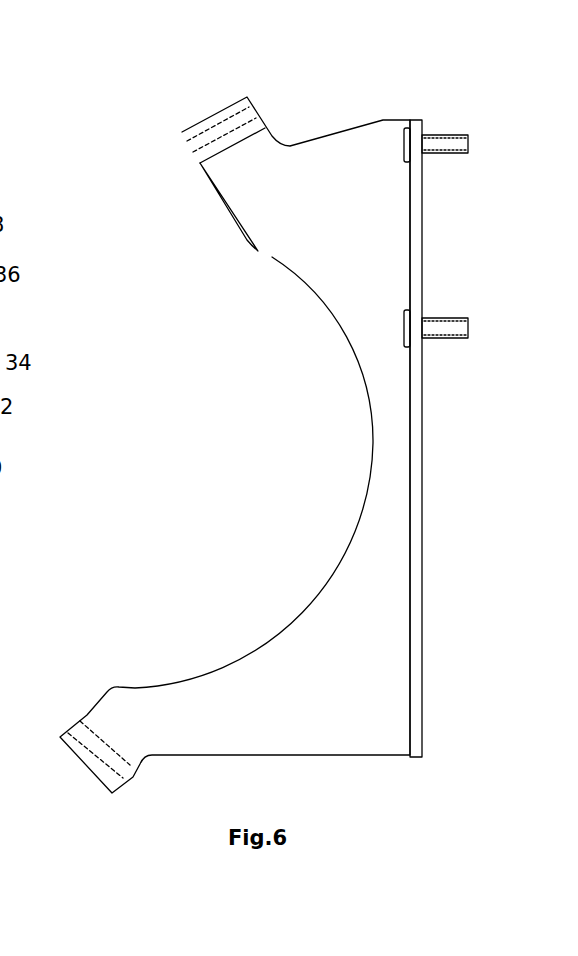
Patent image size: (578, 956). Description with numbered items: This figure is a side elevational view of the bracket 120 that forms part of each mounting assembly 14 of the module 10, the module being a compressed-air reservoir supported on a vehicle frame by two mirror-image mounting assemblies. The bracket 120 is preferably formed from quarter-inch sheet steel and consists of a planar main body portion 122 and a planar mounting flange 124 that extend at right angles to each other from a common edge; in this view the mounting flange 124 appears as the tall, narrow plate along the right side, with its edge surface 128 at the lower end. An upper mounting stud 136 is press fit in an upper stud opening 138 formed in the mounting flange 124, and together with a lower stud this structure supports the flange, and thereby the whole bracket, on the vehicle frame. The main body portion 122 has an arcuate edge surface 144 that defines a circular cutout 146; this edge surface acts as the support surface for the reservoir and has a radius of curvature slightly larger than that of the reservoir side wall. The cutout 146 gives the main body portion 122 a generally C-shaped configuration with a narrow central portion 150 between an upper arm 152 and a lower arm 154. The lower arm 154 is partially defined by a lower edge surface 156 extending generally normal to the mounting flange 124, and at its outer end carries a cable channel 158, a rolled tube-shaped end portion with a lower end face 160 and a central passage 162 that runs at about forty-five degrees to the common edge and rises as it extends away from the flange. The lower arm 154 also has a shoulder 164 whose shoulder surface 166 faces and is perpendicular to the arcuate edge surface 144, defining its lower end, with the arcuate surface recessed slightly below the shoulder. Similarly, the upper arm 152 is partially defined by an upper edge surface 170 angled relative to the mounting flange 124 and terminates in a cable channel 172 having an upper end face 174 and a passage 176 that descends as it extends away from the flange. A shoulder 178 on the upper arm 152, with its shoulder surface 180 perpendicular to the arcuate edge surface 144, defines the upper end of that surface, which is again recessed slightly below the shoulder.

The module 10 is at (194, 455).
The mounting assembly 14 is at (201, 419).
The bracket 120 is at (364, 786).
The main body portion 122 is at (299, 561).
The mounting flange 124 is at (426, 580).
The edge surface 128 is at (417, 735).
The upper mounting stud 136 is at (472, 138).
The upper stud opening 138 is at (472, 325).
The arcuate edge surface 144 is at (272, 647).
The circular cutout 146 is at (305, 474).
The narrow central portion 150 is at (390, 470).
The upper arm 152 is at (347, 212).
The lower arm 154 is at (355, 667).
The lower edge surface 156 is at (278, 756).
The cable channel 158 is at (71, 756).
The lower end face 160 is at (115, 790).
The passage 162 is at (83, 733).
The shoulder 164 is at (122, 685).
The shoulder surface 166 is at (137, 688).
The upper edge surface 170 is at (383, 120).
The cable channel 172 is at (213, 110).
The upper end face 174 is at (250, 97).
The passage 176 is at (250, 118).
The shoulder 178 is at (253, 254).
The shoulder surface 180 is at (272, 258).